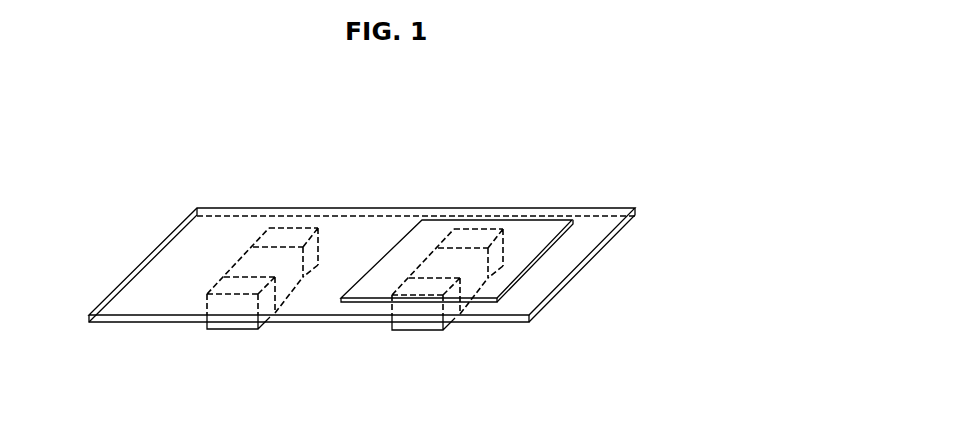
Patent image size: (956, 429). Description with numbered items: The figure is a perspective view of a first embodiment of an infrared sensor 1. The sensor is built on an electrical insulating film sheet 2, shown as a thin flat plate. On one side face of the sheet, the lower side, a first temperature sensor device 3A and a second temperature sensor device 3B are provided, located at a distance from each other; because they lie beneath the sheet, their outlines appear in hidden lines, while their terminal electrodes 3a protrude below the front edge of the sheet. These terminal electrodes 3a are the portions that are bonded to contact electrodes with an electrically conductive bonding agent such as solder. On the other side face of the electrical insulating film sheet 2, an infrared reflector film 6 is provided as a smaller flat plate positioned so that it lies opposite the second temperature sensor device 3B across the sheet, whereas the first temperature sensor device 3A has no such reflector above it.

The infrared sensor 1 is at (607, 182).
The electrical insulating film sheet 2 is at (140, 323).
The first temperature sensor device 3A is at (302, 292).
The second temperature sensor device 3B is at (482, 294).
The terminal electrodes 3a is at (228, 329).
The infrared reflector film 6 is at (436, 234).